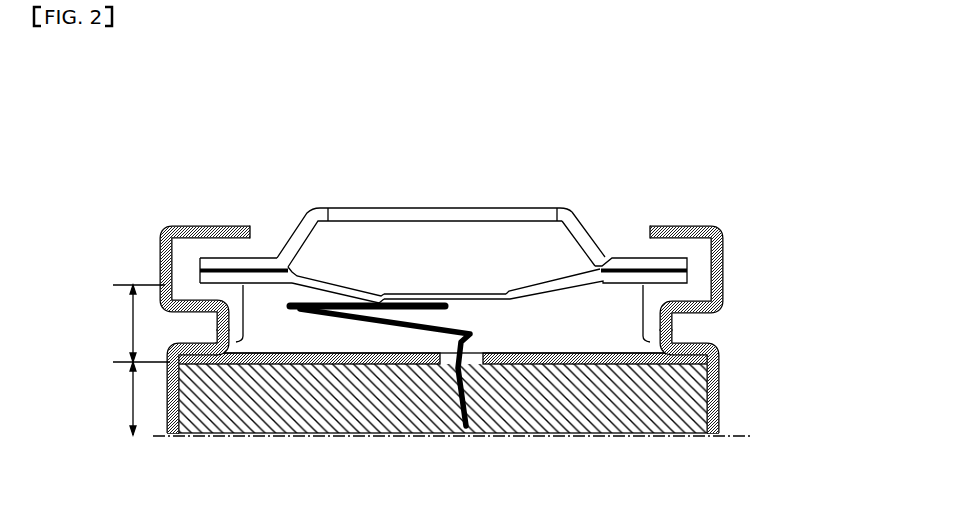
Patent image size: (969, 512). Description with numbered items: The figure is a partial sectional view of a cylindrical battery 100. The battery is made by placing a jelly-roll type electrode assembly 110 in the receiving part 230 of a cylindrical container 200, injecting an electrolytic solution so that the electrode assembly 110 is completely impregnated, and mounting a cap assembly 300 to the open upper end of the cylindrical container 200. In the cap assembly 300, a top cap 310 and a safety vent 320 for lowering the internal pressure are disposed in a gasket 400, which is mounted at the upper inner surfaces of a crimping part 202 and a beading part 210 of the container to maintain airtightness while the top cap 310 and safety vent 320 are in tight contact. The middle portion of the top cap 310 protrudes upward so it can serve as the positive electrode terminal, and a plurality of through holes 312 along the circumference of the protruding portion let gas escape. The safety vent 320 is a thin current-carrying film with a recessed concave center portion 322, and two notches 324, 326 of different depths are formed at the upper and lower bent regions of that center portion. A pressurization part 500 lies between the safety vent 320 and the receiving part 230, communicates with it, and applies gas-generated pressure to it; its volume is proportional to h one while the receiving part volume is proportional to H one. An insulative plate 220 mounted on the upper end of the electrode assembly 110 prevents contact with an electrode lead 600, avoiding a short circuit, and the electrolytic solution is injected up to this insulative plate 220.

The cylindrical battery 100 is at (38, 100).
The electrode assembly 110 is at (537, 408).
The cylindrical container 200 is at (718, 410).
The crimping part 202 is at (730, 236).
The beading part 210 is at (705, 343).
The insulative plate 220 is at (233, 354).
The receiving part 230 is at (626, 413).
The cap assembly 300 is at (778, 190).
The top cap 310 is at (507, 198).
The through holes 312 is at (563, 206).
The safety vent 320 is at (320, 268).
The concave center portion 322 is at (407, 290).
The notch 324 is at (600, 254).
The notch 326 is at (380, 295).
The gasket 400 is at (241, 225).
The pressurization part 500 is at (322, 333).
The electrode lead 600 is at (463, 421).